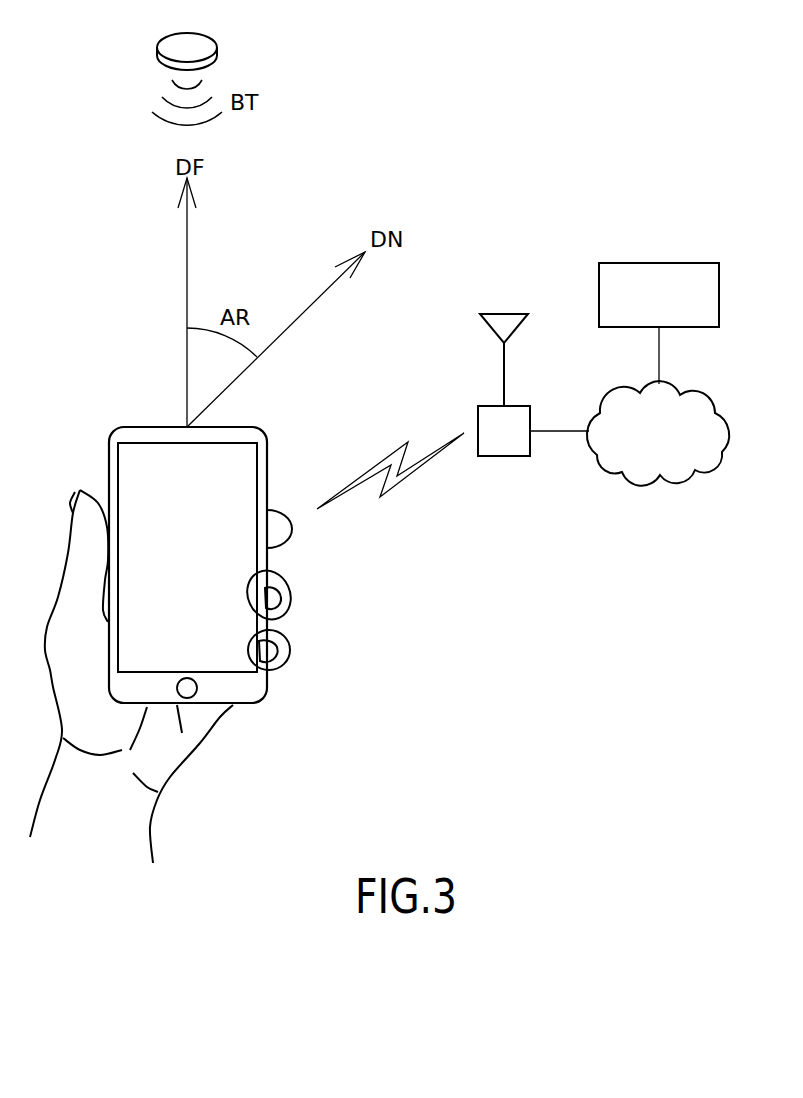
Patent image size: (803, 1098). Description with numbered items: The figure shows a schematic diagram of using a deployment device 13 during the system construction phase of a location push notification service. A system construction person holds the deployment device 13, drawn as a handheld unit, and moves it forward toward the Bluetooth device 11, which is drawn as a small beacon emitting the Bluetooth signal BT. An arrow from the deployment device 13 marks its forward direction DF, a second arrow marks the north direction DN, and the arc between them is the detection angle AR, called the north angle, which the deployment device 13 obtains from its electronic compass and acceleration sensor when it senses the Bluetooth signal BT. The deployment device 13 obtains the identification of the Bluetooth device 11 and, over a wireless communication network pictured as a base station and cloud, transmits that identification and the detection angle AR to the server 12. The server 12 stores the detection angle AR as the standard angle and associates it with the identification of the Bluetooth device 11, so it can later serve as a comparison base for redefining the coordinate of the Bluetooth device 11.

The Bluetooth device 11 is at (170, 47).
The server 12 is at (639, 263).
The deployment device 13 is at (115, 473).